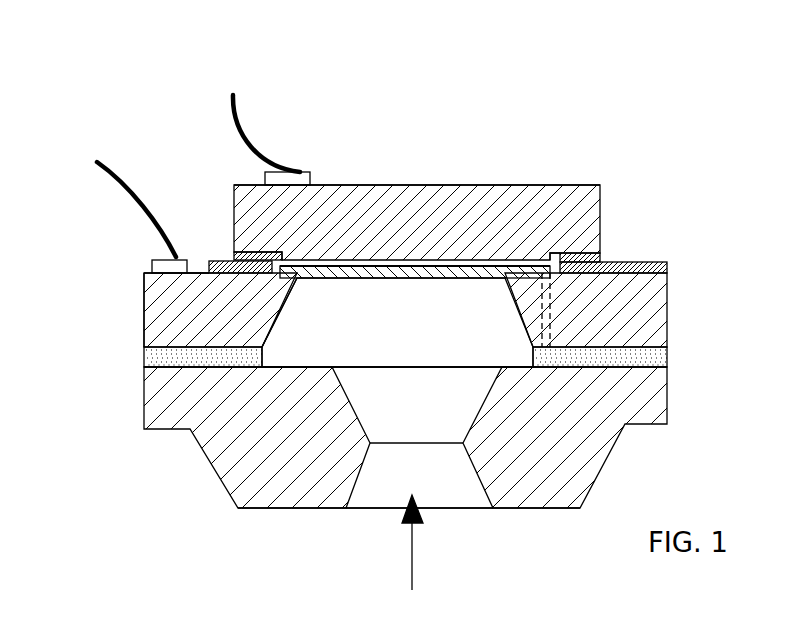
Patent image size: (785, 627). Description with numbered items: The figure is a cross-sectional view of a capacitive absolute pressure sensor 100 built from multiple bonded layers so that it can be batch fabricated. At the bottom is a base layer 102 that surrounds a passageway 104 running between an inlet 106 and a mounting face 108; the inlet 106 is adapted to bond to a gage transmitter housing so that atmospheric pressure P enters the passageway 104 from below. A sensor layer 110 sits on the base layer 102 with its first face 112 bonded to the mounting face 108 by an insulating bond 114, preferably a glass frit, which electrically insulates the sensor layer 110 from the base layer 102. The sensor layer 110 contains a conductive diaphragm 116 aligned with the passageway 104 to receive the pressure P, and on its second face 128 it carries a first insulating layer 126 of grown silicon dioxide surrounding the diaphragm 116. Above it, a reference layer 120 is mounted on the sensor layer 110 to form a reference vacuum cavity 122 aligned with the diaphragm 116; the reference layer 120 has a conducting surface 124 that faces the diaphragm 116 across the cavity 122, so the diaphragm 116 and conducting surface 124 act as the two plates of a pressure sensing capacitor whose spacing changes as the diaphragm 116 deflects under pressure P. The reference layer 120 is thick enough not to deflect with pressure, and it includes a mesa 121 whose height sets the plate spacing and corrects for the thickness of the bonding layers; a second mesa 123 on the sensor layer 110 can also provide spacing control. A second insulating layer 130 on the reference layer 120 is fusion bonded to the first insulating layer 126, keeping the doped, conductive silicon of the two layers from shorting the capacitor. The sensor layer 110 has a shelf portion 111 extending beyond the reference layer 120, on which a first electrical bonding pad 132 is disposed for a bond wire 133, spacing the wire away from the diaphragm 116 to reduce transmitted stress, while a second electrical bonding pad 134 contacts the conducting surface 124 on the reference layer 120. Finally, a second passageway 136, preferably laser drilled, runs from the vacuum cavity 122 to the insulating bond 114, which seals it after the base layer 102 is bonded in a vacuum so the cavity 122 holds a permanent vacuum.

The pressure sensor 100 is at (652, 122).
The base layer 102 is at (633, 395).
The passageway 104 is at (428, 421).
The inlet 106 is at (492, 508).
The mounting face 108 is at (300, 366).
The sensor layer 110 is at (643, 312).
The shelf portion 111 is at (173, 275).
The first face 112 is at (163, 347).
The insulating bond 114 is at (167, 355).
The conductive diaphragm 116 is at (435, 273).
The reference layer 120 is at (587, 203).
The mesa 121 is at (548, 258).
The reference vacuum cavity 122 is at (433, 267).
The second mesa 123 is at (297, 275).
The conducting surface 124 is at (362, 262).
The first insulating layer 126 is at (212, 261).
The second face 128 is at (200, 273).
The second insulating layer 130 is at (234, 253).
The first electrical bonding pad 132 is at (153, 261).
The bond wire 133 is at (130, 195).
The second electrical bonding pad 134 is at (300, 178).
The second passageway 136 is at (550, 313).
The pressure P is at (413, 557).